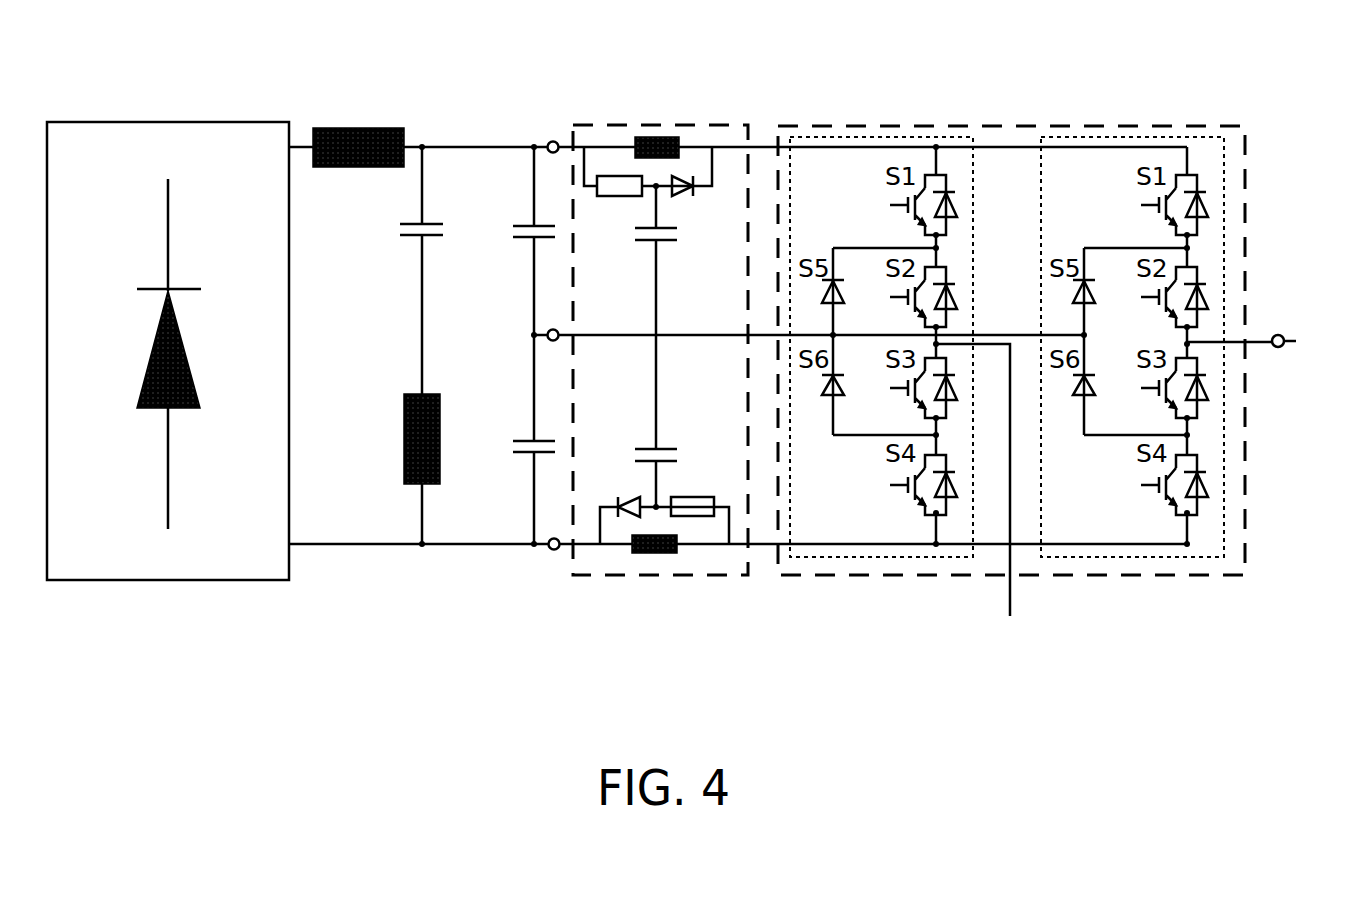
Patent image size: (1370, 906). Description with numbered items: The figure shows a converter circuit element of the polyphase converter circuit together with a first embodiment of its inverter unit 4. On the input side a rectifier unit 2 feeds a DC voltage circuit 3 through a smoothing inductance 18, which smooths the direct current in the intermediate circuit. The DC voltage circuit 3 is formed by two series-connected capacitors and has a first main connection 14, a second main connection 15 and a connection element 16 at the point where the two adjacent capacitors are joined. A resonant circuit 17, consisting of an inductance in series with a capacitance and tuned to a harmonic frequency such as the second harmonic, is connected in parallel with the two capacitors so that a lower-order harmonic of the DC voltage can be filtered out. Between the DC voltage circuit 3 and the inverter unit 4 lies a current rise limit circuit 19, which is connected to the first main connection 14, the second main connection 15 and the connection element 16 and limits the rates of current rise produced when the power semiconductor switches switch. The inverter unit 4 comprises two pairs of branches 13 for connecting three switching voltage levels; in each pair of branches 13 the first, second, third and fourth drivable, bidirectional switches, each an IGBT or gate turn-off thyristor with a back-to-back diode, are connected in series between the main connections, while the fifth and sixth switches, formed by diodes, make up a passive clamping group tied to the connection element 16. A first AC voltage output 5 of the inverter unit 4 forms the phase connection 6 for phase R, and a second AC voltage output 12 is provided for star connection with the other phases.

The rectifier unit 2 is at (210, 121).
The smoothing inductance 18 is at (363, 127).
The DC voltage circuit 3 is at (505, 285).
The resonant circuit 17 is at (443, 318).
The first main connection 14 is at (551, 141).
The second main connection 15 is at (557, 550).
The connection element 16 is at (557, 340).
The current rise limit circuit 19 is at (748, 478).
The inverter unit 4 is at (837, 125).
The pair of branches 13 is at (1147, 137).
The second AC voltage output 12 is at (1010, 588).
The first AC voltage output 5 is at (1256, 341).
The phase connection 6 is at (1281, 335).